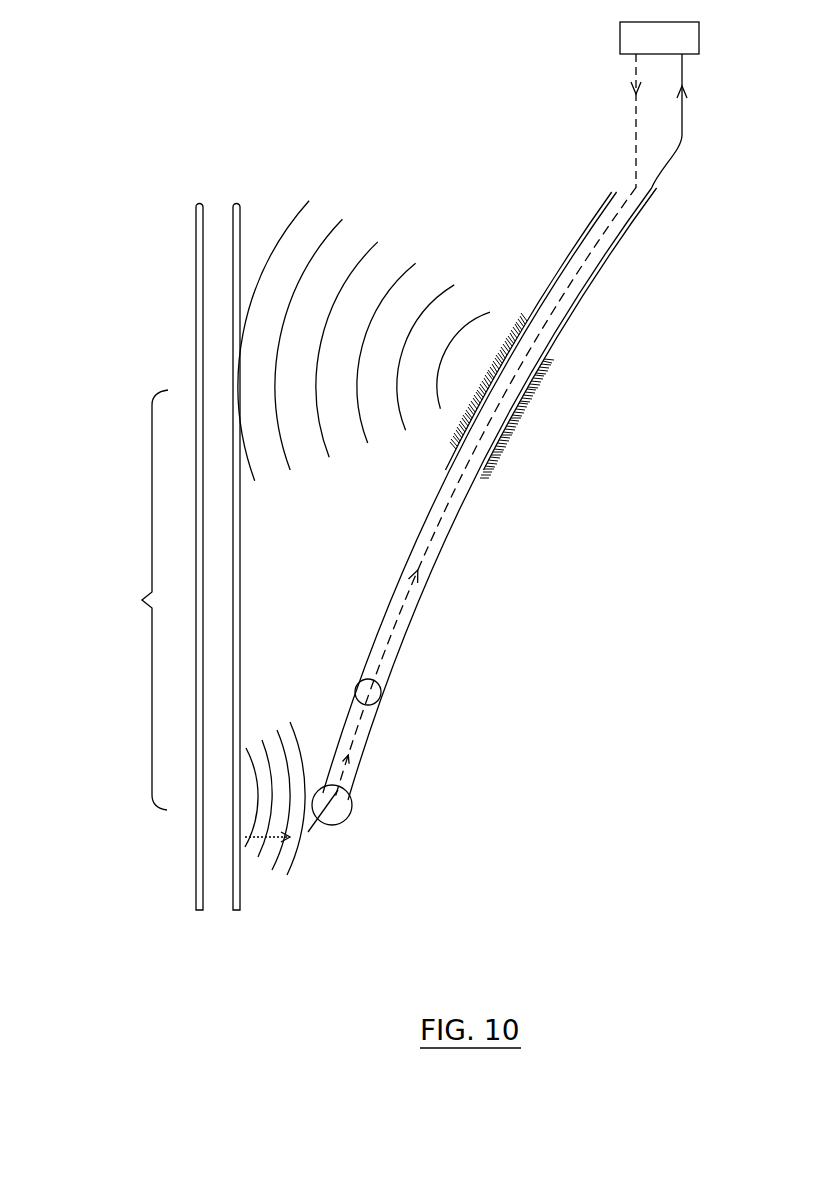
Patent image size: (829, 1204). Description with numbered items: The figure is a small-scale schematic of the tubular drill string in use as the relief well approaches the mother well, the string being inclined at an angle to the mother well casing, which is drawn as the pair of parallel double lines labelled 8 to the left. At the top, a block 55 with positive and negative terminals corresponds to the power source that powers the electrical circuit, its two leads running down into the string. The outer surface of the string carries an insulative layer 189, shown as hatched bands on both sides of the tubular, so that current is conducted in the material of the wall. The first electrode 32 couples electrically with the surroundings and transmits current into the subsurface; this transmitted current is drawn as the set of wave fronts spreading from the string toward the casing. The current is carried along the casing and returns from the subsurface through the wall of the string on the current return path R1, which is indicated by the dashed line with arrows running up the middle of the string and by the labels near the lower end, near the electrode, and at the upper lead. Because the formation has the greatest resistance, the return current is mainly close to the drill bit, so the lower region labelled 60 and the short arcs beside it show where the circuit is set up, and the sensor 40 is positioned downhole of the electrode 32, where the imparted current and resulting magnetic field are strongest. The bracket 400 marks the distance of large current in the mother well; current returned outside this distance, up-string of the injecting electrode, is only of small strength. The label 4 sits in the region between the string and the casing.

The power source 55 is at (699, 32).
The current return path R1 is at (628, 210).
The insulative layer 189 is at (550, 362).
The first electrode 32 is at (484, 388).
The sensor 40 is at (382, 700).
The emitter 60 is at (346, 812).
The wall layers 8 is at (190, 887).
The distance 400 is at (130, 600).
The fluid gap 4 is at (295, 610).